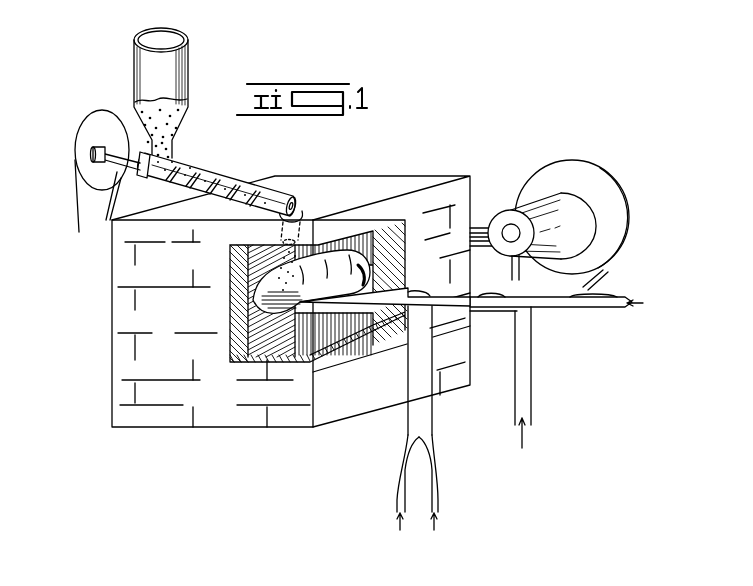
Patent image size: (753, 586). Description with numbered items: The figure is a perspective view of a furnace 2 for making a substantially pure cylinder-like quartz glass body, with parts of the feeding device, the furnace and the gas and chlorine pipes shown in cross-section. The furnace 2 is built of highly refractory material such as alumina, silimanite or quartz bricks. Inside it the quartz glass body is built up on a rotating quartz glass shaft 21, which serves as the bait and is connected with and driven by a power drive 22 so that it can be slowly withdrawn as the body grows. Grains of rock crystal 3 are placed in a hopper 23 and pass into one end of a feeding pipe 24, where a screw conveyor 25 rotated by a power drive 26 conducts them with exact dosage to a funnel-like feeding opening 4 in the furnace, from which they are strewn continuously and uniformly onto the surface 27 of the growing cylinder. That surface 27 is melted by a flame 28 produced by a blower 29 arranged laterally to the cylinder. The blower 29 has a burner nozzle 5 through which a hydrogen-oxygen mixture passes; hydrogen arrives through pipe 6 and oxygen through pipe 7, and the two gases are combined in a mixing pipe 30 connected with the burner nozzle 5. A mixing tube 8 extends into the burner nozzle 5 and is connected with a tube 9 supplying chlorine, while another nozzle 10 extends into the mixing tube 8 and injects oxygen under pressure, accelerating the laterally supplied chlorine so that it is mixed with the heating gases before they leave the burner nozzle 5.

The furnace 2 is at (215, 428).
The grains of rock crystal 3 is at (183, 130).
The funnel-like feeding opening 4 is at (300, 213).
The burner nozzle 5 is at (353, 357).
The pipe 6 is at (400, 470).
The pipe 7 is at (440, 478).
The mixing tube 8 is at (445, 313).
The tube 9 is at (527, 398).
The nozzle 10 is at (597, 308).
The rotating quartz glass shaft 21 is at (480, 236).
The power drive 22 is at (609, 181).
The hopper 23 is at (143, 88).
The feeding pipe 24 is at (237, 177).
The screw conveyor 25 is at (200, 177).
The power drive 26 is at (111, 128).
The surface 27 is at (235, 301).
The flame 28 is at (282, 302).
The blower 29 is at (400, 295).
The mixing pipe 30 is at (438, 416).